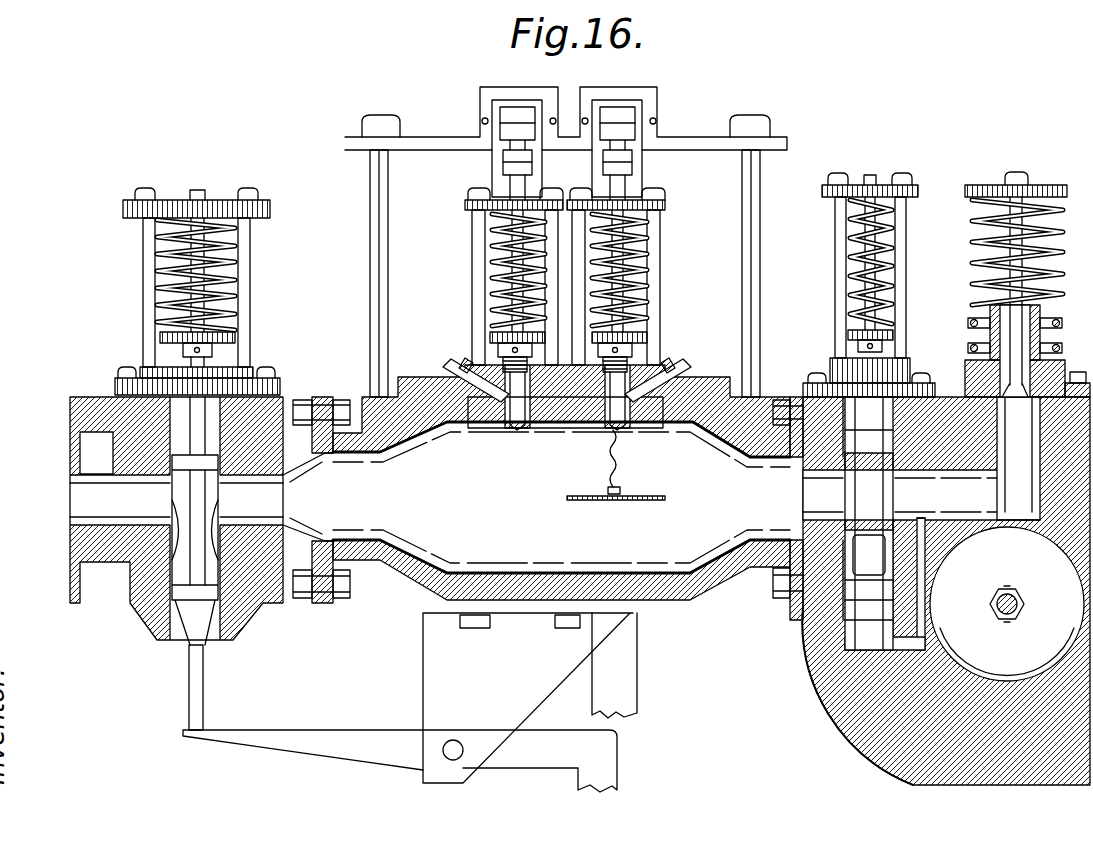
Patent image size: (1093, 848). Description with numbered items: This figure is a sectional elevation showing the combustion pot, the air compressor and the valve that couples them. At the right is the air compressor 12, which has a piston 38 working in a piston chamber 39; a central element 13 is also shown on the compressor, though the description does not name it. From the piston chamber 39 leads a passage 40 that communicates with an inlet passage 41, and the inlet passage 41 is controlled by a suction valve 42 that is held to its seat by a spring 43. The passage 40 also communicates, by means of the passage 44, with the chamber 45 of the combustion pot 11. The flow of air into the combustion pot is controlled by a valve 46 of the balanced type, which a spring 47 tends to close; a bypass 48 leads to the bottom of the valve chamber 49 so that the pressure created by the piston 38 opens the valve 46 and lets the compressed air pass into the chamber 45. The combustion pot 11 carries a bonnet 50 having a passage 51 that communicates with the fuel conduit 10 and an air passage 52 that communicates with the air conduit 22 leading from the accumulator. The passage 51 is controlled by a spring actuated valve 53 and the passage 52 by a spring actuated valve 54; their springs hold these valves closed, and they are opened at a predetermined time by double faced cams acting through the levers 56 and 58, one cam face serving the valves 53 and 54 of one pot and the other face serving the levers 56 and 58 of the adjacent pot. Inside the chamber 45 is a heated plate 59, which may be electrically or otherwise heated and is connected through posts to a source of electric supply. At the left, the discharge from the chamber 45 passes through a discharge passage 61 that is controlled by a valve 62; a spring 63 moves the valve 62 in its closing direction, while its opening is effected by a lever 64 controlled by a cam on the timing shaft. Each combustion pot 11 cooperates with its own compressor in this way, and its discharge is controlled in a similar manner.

The fuel conduit 10 is at (672, 365).
The combustion pot 11 is at (417, 578).
The air compressor 12 is at (860, 730).
The nut 13 is at (1003, 612).
The air conduit 22 is at (447, 360).
The piston 38 is at (942, 583).
The piston chamber 39 is at (940, 586).
The passage 40 is at (933, 500).
The inlet passage 41 is at (992, 412).
The suction valve 42 is at (985, 318).
The spring 43 is at (975, 248).
The passage 44 is at (968, 380).
The chamber 45 is at (561, 497).
The valve 46 is at (845, 497).
The spring 47 is at (848, 280).
The bypass 48 is at (918, 553).
The valve chamber 49 is at (830, 658).
The bonnet 50 is at (575, 410).
The passage 51 is at (612, 430).
The air passage 52 is at (520, 432).
The spring actuated valve 53 is at (605, 452).
The spring actuated valve 54 is at (492, 428).
The lever 56 is at (632, 183).
The lever 58 is at (505, 170).
The heated plate 59 is at (665, 500).
The discharge passage 61 is at (185, 498).
The valve 62 is at (183, 498).
The spring 63 is at (232, 268).
The lever 64 is at (368, 735).